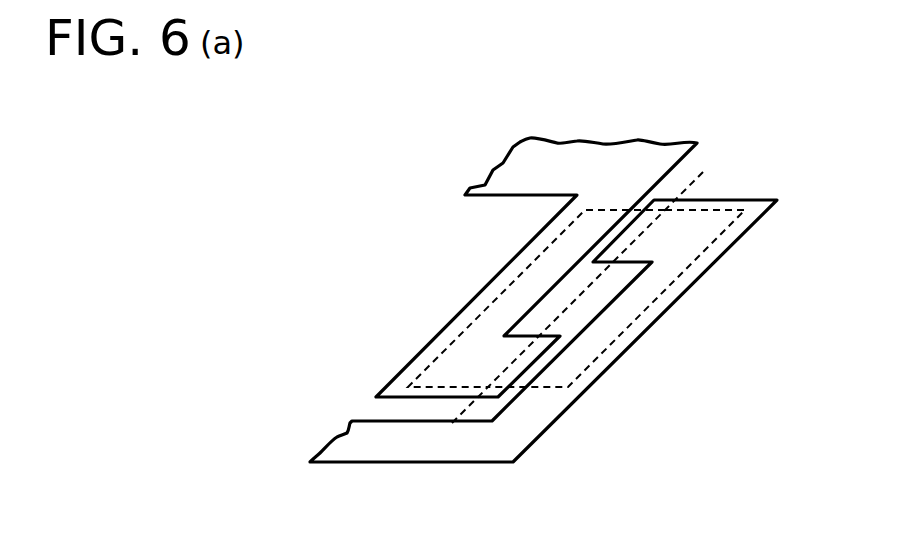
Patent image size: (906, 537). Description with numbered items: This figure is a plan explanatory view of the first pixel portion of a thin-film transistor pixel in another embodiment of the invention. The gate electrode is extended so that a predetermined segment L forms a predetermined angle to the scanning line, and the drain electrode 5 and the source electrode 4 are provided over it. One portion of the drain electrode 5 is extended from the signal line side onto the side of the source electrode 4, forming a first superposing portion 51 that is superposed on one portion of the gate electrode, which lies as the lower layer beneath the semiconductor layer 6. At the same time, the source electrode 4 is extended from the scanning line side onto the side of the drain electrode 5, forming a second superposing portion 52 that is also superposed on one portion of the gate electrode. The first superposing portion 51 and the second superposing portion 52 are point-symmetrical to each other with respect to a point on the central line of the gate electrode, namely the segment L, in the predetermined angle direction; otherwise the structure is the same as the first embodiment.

The source electrode 4 is at (522, 433).
The drain electrode 5 is at (620, 158).
The semiconductor layer 6 is at (617, 233).
The first superposing portion 51 is at (480, 292).
The second superposing portion 52 is at (687, 247).
The segment L is at (570, 303).